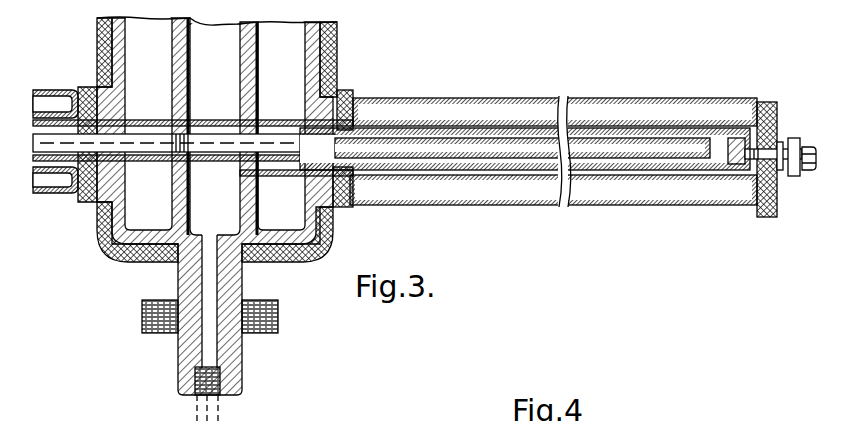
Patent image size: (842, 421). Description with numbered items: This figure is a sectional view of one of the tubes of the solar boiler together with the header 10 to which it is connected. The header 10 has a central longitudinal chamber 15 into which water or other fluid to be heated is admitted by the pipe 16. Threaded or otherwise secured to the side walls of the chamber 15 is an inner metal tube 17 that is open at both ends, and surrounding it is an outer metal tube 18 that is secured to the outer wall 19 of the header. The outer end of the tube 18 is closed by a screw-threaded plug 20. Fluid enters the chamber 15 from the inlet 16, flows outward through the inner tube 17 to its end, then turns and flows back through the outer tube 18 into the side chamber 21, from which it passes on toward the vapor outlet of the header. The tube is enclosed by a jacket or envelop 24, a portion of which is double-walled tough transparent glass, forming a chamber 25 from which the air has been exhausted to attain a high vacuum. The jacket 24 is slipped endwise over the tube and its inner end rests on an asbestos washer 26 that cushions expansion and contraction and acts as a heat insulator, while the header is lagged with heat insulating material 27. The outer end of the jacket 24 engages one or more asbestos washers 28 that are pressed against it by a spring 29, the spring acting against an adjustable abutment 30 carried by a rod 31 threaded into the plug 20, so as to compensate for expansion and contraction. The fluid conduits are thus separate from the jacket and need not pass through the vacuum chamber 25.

The header 10 is at (217, 12).
The central longitudinal chamber 15 is at (215, 195).
The pipe 16 is at (197, 410).
The metal tube 17 is at (147, 152).
The metal tube 18 is at (400, 134).
The outer wall 19 is at (336, 99).
The screw-threaded plug 20 is at (735, 170).
The chamber 21 is at (215, 123).
The jacket 24 is at (626, 100).
The chamber 25 is at (592, 200).
The washer 26 is at (350, 207).
The heat insulating material 27 is at (303, 262).
The washer 28 is at (767, 217).
The spring 29 is at (790, 140).
The adjustable abutment 30 is at (796, 176).
The rod 31 is at (752, 147).